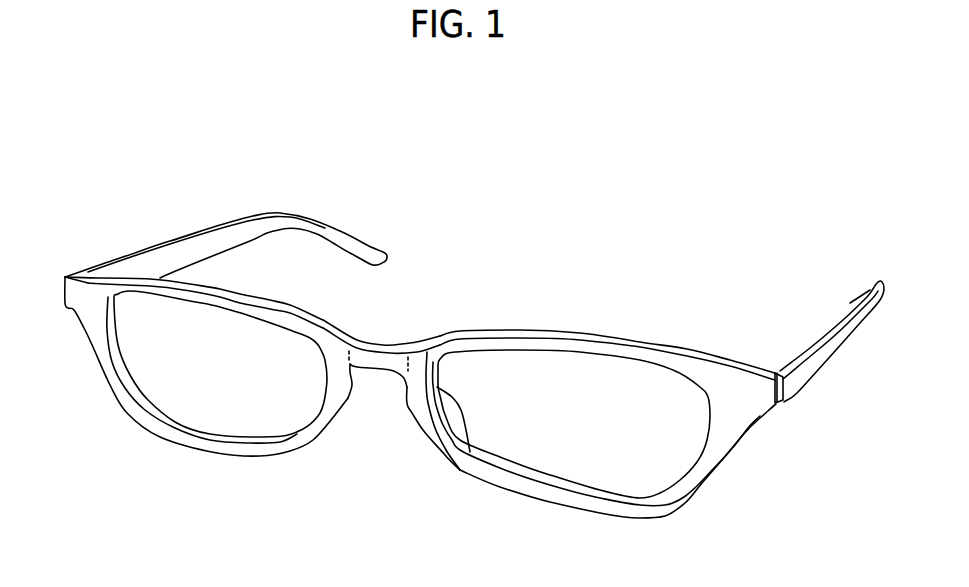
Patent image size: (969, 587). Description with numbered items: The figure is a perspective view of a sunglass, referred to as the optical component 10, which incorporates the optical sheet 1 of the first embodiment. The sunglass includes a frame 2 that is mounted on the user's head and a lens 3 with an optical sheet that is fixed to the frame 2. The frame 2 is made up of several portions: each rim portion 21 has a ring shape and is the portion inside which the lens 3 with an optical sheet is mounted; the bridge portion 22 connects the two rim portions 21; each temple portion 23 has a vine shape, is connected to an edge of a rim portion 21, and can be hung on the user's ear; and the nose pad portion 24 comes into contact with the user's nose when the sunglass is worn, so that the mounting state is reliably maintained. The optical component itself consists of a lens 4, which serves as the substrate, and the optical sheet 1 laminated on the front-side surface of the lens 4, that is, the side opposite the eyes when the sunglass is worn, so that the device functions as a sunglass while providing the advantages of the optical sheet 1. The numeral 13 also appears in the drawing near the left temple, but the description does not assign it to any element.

The optical sheet 1 is at (230, 410).
The frame 2 is at (682, 346).
The lens with an optical sheet 3 is at (150, 382).
The lens 4 is at (143, 353).
The optical component 10 is at (704, 132).
The left temple 13 is at (413, 197).
The rim portion 21 is at (251, 303).
The bridge portion 22 is at (380, 348).
The temple portion 23 is at (176, 238).
The nose pad portion 24 is at (332, 400).